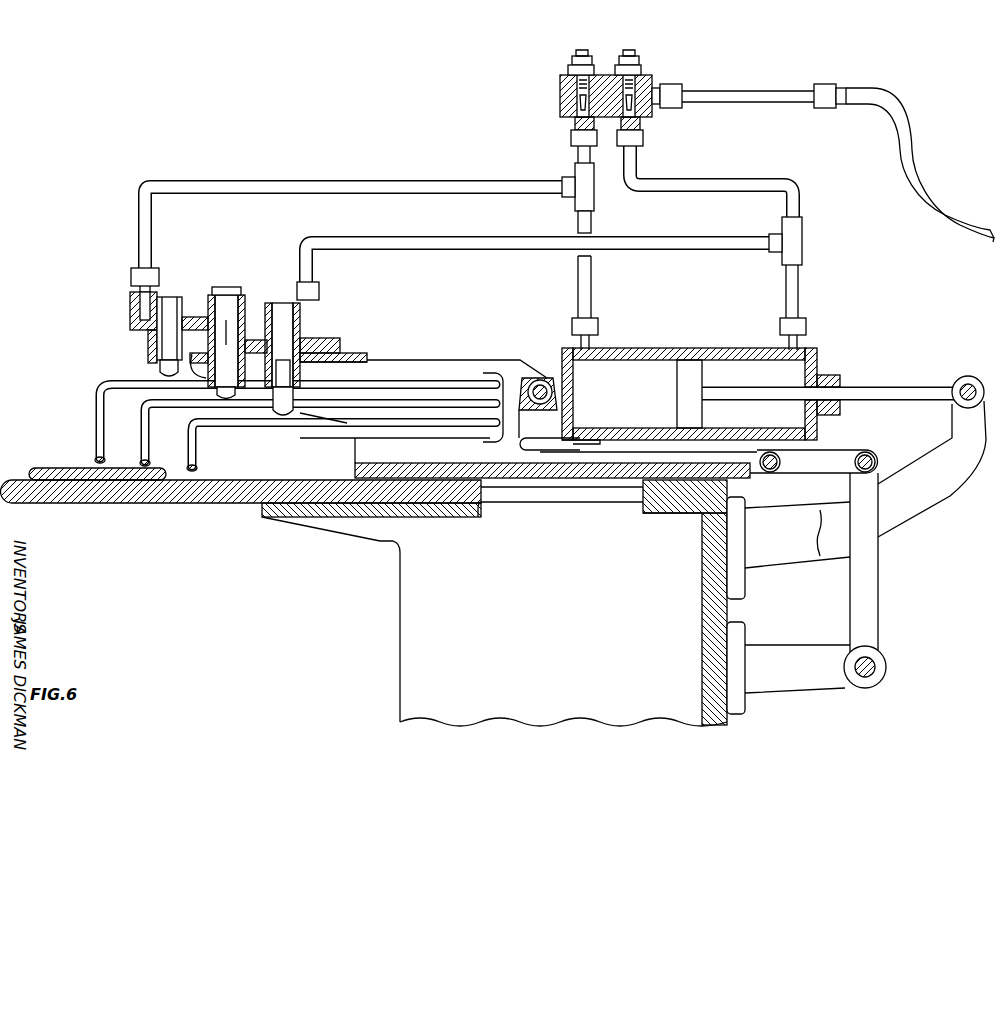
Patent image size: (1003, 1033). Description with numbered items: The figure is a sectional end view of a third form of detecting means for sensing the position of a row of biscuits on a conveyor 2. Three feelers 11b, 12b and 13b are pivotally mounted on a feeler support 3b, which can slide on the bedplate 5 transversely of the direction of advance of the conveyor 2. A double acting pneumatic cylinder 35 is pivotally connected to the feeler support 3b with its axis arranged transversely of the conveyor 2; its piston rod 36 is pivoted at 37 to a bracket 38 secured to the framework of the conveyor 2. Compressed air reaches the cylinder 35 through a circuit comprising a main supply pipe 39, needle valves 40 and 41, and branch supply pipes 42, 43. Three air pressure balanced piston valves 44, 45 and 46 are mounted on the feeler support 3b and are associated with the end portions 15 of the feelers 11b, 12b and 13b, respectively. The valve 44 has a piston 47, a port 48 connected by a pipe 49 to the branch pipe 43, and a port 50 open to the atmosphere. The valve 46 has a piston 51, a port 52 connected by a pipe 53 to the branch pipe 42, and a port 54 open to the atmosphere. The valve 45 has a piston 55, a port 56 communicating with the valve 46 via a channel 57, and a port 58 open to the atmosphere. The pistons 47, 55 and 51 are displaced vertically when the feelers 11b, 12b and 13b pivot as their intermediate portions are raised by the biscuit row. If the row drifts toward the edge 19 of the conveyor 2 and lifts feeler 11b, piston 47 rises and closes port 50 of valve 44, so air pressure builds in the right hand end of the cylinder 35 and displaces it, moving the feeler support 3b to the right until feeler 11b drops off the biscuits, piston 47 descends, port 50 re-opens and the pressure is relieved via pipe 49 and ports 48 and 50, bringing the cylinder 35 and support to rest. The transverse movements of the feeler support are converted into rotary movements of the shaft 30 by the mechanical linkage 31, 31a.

The conveyor 2 is at (30, 482).
The feeler support 3b is at (522, 360).
The bedplate 5 is at (479, 515).
The feeler 11b is at (473, 425).
The feeler 12b is at (452, 402).
The feeler 13b is at (417, 382).
The end portions of the feelers 15 is at (408, 435).
The edge of the conveyor 19 is at (262, 504).
The shaft 30 is at (882, 668).
The mechanical linkage 31 is at (845, 452).
The mechanical linkage 31a is at (880, 586).
The double acting pneumatic cylinder 35 is at (648, 349).
The piston rod 36 is at (731, 386).
The pivot 37 is at (960, 384).
The bracket 38 is at (951, 431).
The main supply pipe 39 is at (925, 140).
The needle valve 40 is at (560, 97).
The needle valve 41 is at (655, 81).
The branch supply pipe 42 is at (573, 160).
The branch supply pipe 43 is at (760, 183).
The piston valve 44 is at (280, 277).
The piston valve 45 is at (228, 261).
The piston valve 46 is at (174, 260).
The piston 47 is at (283, 398).
The port 48 is at (320, 337).
The pipe 49 is at (376, 244).
The port 50 is at (308, 356).
The piston 51 is at (162, 356).
The port 52 is at (130, 326).
The pipe 53 is at (137, 236).
The port 54 is at (148, 346).
The piston 55 is at (226, 398).
The port 56 is at (228, 320).
The channel 57 is at (197, 300).
The port 58 is at (254, 322).